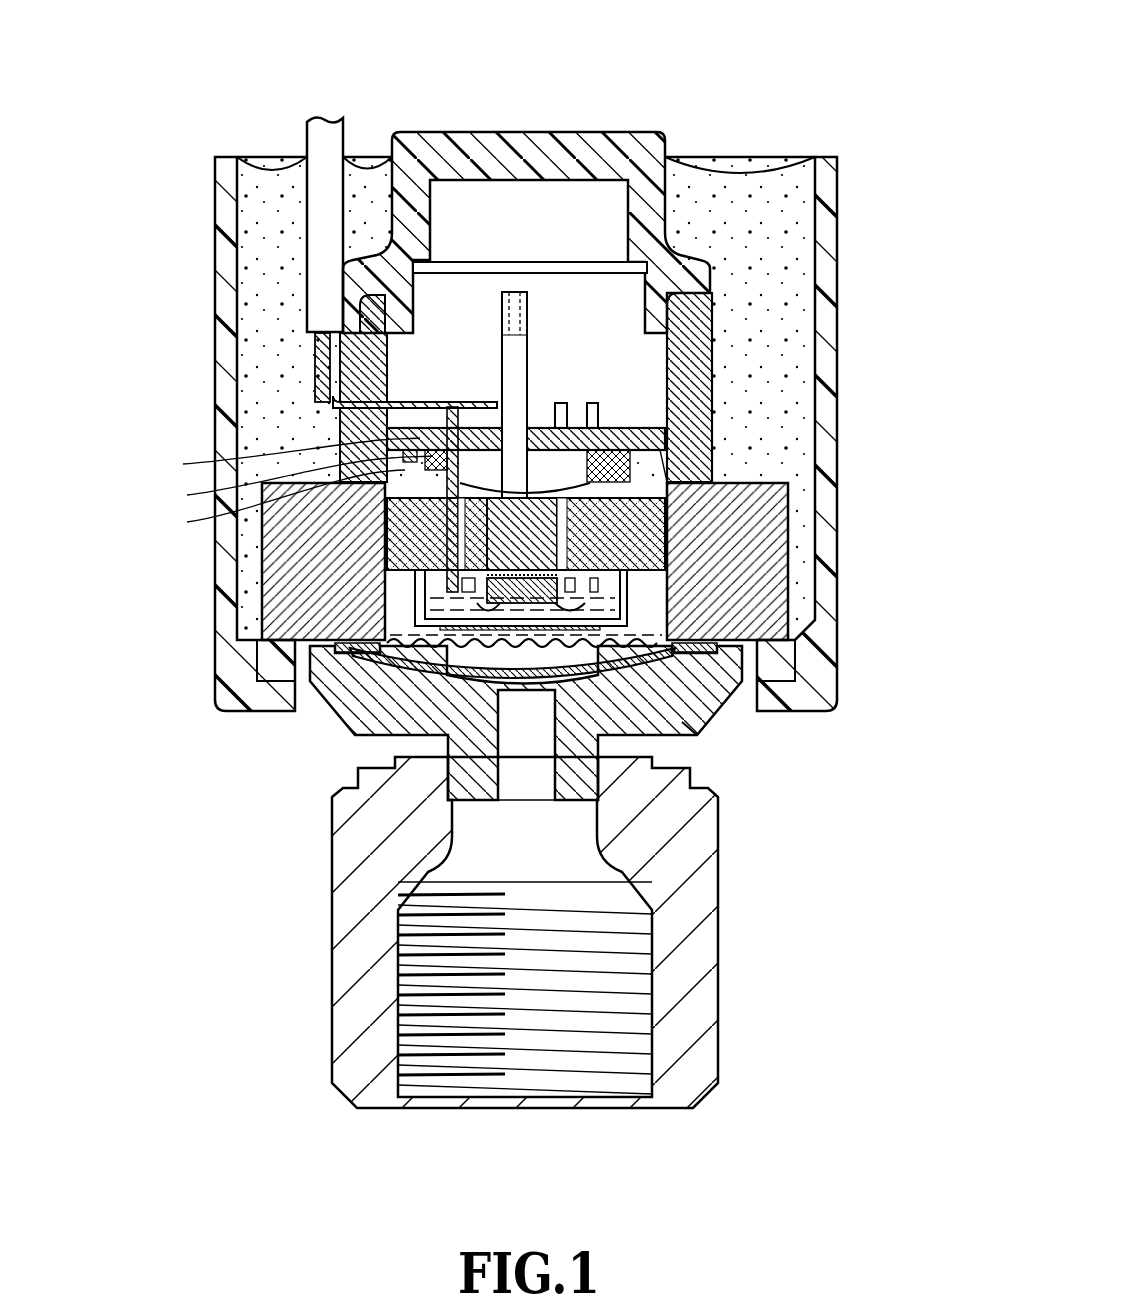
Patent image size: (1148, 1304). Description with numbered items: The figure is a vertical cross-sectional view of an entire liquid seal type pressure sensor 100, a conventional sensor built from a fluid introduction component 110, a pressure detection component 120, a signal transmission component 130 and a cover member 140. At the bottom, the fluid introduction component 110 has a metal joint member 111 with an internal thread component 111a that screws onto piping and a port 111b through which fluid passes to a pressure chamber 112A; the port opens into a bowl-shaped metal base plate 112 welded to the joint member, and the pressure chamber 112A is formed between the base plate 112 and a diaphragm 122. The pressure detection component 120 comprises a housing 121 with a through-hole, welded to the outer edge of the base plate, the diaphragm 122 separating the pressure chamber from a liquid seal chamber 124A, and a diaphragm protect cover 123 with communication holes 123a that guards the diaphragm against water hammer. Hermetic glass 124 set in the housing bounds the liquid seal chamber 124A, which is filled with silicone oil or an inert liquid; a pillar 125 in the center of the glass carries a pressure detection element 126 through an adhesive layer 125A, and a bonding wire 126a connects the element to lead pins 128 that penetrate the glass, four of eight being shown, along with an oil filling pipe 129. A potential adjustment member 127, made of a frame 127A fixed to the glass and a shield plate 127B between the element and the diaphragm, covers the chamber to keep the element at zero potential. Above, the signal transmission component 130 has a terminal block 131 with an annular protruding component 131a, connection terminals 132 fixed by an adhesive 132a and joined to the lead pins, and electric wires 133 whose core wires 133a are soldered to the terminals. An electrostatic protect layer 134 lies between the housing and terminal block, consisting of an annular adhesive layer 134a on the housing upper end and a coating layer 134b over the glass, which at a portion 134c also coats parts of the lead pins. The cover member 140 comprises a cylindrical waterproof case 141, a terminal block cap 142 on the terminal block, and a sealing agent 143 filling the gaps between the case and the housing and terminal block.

The liquid seal type pressure sensor 100 is at (760, 80).
The fluid introduction component 110 is at (780, 849).
The joint member 111 is at (718, 940).
The internal thread component 111a is at (652, 1050).
The port 111b is at (556, 798).
The base plate 112 is at (695, 725).
The pressure chamber 112A is at (700, 728).
The pressure detection component 120 is at (800, 478).
The housing 121 is at (770, 506).
The diaphragm 122 is at (400, 665).
The diaphragm protect cover 123 is at (447, 670).
The communication holes 123a is at (440, 660).
The hermetic glass 124 is at (650, 538).
The liquid seal chamber 124A is at (683, 703).
The pillar 125 is at (610, 560).
The adhesive layer 125A is at (480, 578).
The pressure detection element 126 is at (600, 588).
The bonding wire 126a is at (565, 607).
The potential adjustment member 127 is at (130, 630).
The frame 127A is at (450, 628).
The shield plate 127B is at (470, 643).
The lead pins 128 is at (593, 403).
The oil filling pipe 129 is at (527, 300).
The signal transmission component 130 is at (284, 301).
The terminal block 131 is at (700, 385).
The annular protruding component 131a is at (645, 455).
The connection terminals 132 is at (438, 405).
The adhesive 132a is at (412, 432).
The electric wires 133 is at (310, 247).
The core wires 133a is at (330, 366).
The electrostatic protect layer 134 is at (122, 450).
The adhesive layer 134a is at (265, 506).
The coating layer 134b is at (278, 483).
The portion 134c is at (272, 458).
The cover member 140 is at (836, 150).
The waterproof case 141 is at (830, 186).
The terminal block cap 142 is at (628, 152).
The sealing agent 143 is at (265, 212).